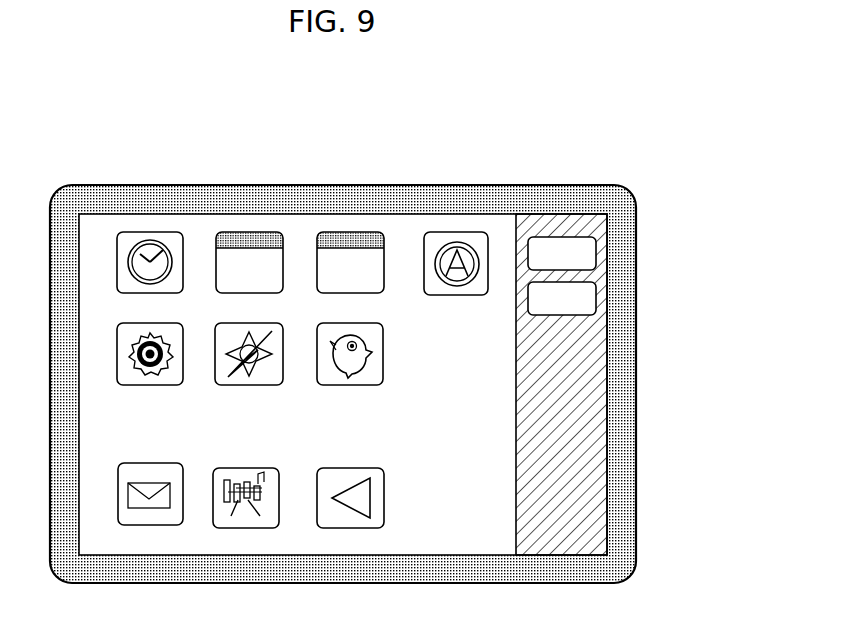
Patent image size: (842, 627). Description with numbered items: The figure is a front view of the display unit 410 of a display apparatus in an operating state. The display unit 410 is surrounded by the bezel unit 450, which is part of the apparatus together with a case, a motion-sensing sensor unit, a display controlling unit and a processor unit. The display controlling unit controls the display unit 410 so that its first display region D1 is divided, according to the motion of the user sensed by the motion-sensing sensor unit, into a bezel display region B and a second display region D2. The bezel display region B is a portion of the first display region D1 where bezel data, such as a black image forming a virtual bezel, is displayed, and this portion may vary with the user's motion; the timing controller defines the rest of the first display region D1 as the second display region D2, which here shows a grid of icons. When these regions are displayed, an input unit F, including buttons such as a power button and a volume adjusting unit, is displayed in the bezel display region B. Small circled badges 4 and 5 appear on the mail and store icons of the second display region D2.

The display unit 410 is at (138, 139).
The bezel unit 450 is at (349, 198).
The first display region D1 is at (236, 216).
The second display region D2 is at (408, 231).
The input unit F is at (571, 237).
The bezel display region B is at (575, 377).
The mail notification badge 4 is at (154, 491).
The store notification badge 5 is at (460, 261).